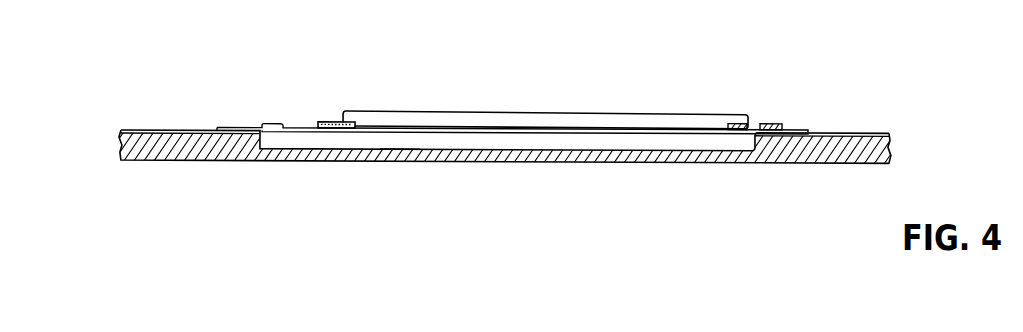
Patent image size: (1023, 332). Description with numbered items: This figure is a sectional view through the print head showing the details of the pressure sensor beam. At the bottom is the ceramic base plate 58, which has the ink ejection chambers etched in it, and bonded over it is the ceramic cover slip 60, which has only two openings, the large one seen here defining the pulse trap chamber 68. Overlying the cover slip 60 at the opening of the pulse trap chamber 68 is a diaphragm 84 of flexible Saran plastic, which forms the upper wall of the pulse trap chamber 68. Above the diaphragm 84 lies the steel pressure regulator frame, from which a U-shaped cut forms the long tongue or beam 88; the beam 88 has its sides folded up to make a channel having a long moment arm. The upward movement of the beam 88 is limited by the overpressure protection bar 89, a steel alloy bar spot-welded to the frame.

The ceramic base plate 58 is at (657, 162).
The ceramic cover slip 60 is at (776, 131).
The pulse trap chamber 68 is at (412, 152).
The diaphragm 84 is at (276, 126).
The beam 88 is at (441, 127).
The overpressure protection bar 89 is at (329, 121).